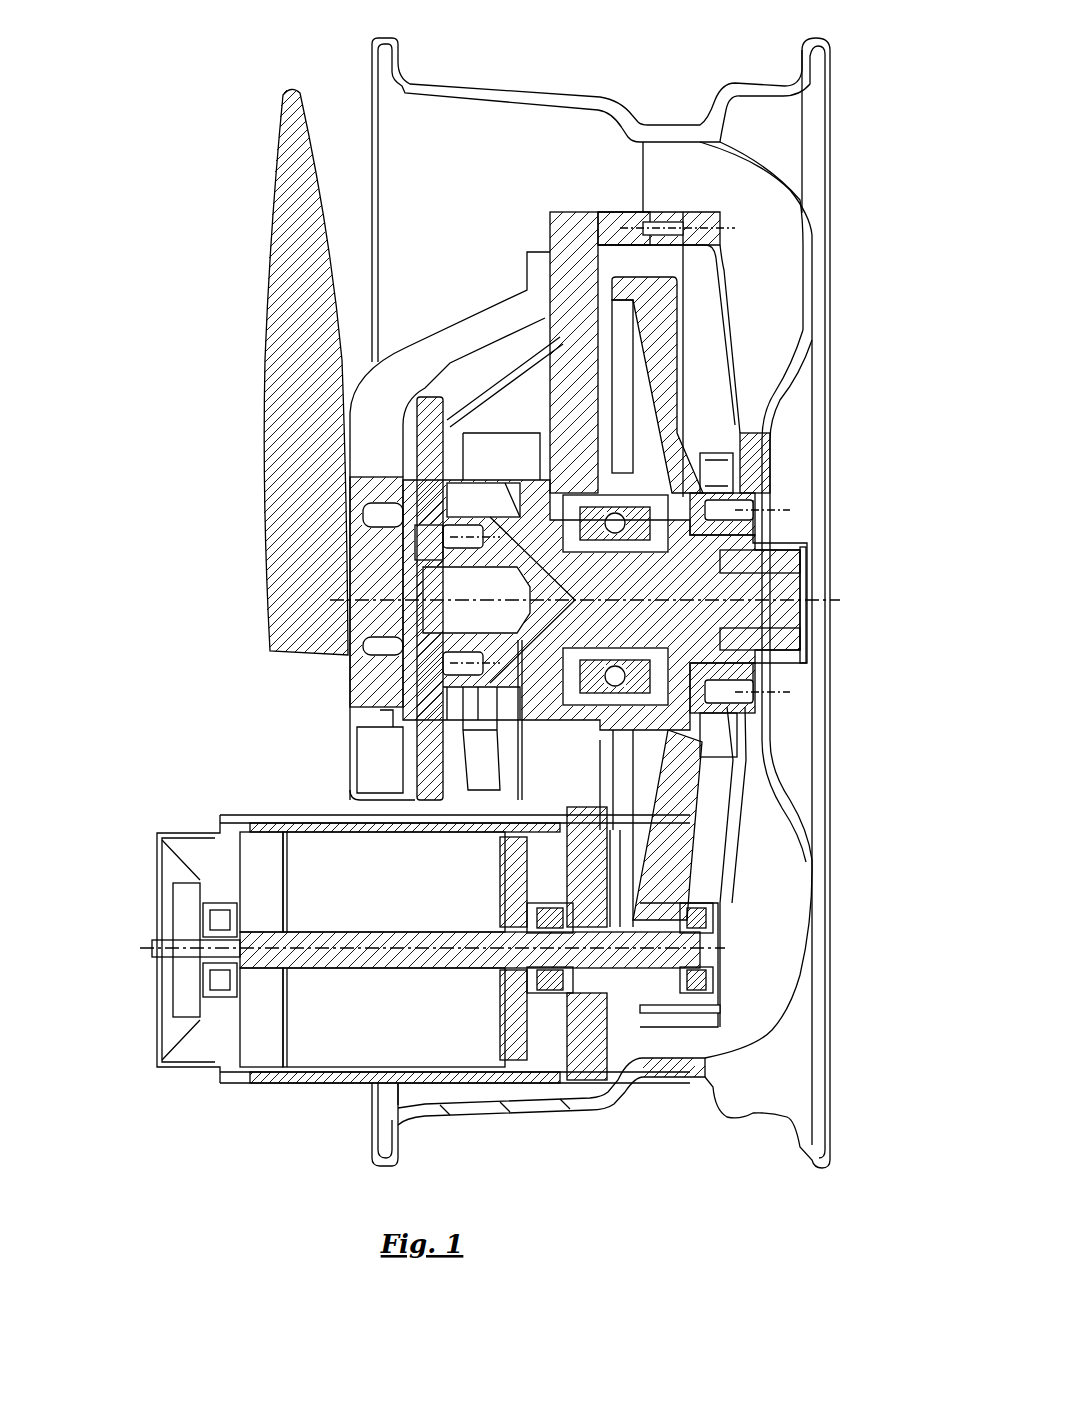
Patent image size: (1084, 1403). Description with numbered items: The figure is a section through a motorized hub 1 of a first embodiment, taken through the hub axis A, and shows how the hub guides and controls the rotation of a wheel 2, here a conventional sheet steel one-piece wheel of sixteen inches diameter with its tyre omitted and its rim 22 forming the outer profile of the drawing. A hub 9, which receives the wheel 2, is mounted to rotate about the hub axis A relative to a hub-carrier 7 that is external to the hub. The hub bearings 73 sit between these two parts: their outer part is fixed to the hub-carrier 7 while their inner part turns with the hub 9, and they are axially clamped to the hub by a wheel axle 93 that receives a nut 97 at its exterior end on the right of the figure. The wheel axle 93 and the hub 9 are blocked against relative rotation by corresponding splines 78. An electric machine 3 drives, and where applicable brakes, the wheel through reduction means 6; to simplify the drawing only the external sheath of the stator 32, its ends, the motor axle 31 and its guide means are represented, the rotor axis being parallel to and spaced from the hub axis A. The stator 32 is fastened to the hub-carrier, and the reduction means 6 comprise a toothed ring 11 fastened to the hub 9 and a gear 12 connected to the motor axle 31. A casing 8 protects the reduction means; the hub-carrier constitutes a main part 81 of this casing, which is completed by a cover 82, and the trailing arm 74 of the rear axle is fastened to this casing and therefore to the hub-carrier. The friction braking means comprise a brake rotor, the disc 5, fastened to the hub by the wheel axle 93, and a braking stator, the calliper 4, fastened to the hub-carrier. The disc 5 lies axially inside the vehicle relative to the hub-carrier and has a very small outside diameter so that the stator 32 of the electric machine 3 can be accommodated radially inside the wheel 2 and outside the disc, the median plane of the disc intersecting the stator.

The motorized hub 1 is at (222, 100).
The wheel 2 is at (812, 112).
The rim 22 is at (551, 1087).
The electric machine 3 is at (527, 973).
The motor axle 31 is at (330, 940).
The stator 32 is at (365, 1070).
The brake calliper 4 is at (495, 445).
The brake disc 5 is at (430, 770).
The reduction means 6 is at (707, 946).
The hub-carrier 7 is at (470, 740).
The trailing arm 74 is at (300, 278).
The casing 8 is at (637, 126).
The main part of the casing 81 is at (600, 210).
The cover 82 is at (700, 212).
The hub 9 is at (690, 545).
The wheel axle 93 is at (785, 615).
The nut 97 is at (790, 645).
The splines 78 is at (765, 673).
The hub bearings 73 is at (592, 683).
The toothed ring 11 is at (660, 888).
The gear 12 is at (637, 970).
The hub axis A is at (838, 592).